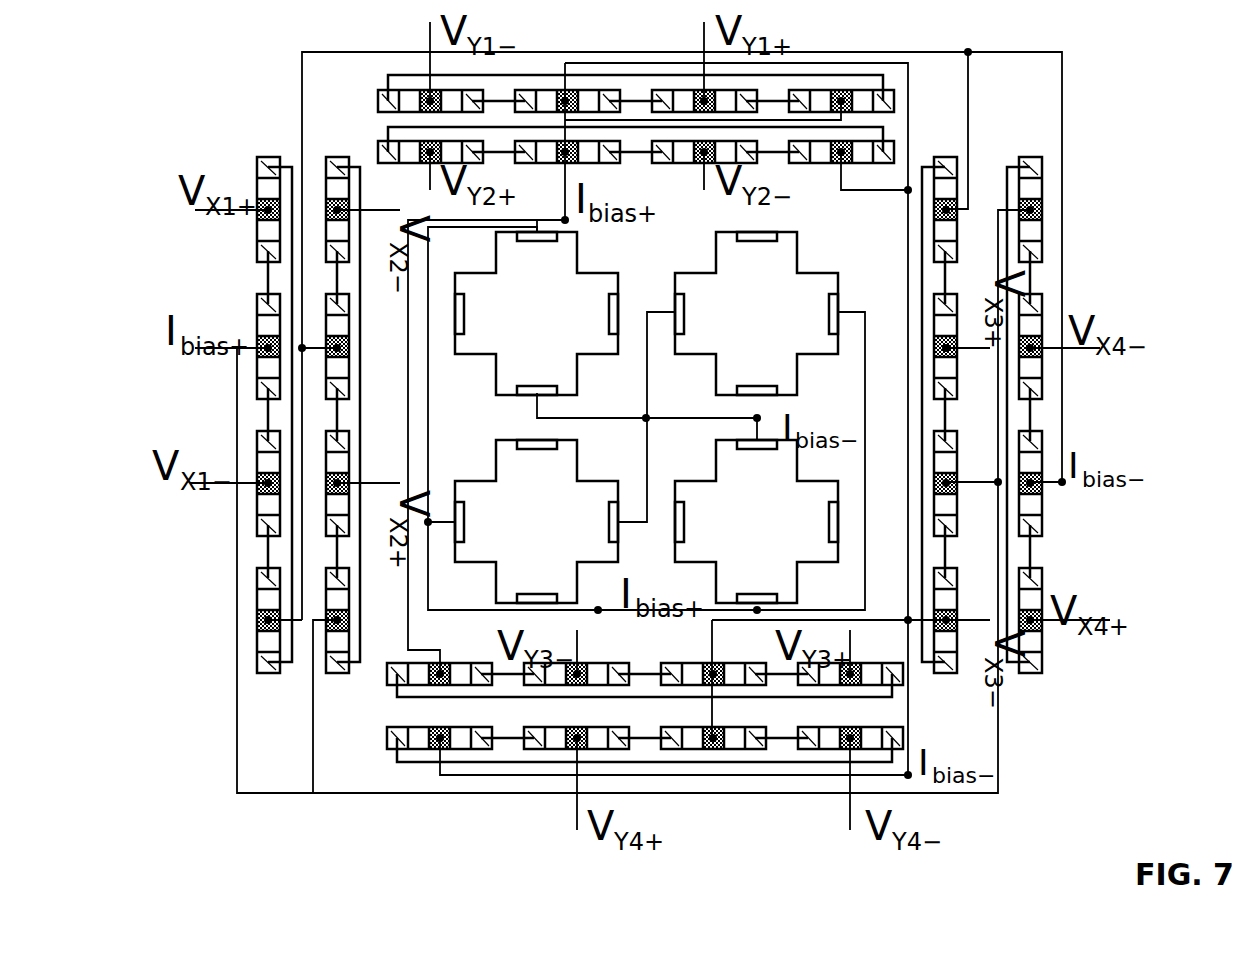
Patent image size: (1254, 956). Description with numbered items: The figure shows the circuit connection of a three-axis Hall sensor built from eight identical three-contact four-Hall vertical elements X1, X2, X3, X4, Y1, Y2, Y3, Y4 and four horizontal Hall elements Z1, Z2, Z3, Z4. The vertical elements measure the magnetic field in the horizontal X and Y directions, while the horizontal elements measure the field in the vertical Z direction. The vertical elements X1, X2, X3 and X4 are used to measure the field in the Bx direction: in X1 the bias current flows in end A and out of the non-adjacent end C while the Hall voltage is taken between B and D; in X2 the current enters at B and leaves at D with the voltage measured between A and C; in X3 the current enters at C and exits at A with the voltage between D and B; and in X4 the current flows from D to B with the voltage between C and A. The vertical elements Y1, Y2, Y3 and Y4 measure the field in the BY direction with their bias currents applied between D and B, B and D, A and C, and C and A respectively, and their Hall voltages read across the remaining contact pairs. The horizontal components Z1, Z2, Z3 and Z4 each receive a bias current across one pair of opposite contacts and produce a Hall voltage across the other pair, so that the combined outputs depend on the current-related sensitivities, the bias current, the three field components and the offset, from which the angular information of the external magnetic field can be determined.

The vertical Hall element X1 is at (270, 157).
The vertical Hall element X2 is at (337, 157).
The vertical Hall element X3 is at (945, 157).
The vertical Hall element X4 is at (1030, 157).
The vertical Hall element Y1 is at (378, 95).
The vertical Hall element Y2 is at (378, 145).
The vertical Hall element Y3 is at (387, 674).
The vertical Hall element Y4 is at (387, 738).
The first horizontal Hall component Z1 is at (536, 313).
The second horizontal Hall component Z2 is at (536, 522).
The third horizontal Hall component Z3 is at (756, 521).
The fourth horizontal Hall component Z4 is at (756, 315).